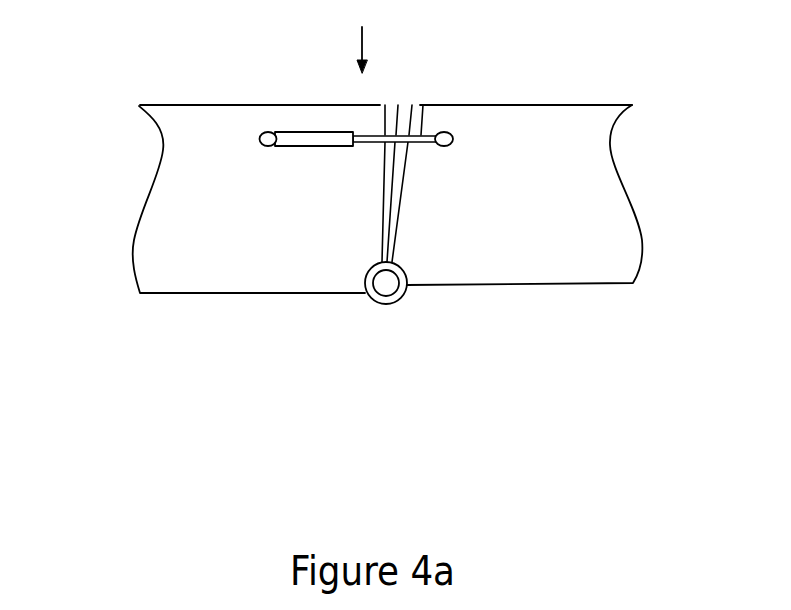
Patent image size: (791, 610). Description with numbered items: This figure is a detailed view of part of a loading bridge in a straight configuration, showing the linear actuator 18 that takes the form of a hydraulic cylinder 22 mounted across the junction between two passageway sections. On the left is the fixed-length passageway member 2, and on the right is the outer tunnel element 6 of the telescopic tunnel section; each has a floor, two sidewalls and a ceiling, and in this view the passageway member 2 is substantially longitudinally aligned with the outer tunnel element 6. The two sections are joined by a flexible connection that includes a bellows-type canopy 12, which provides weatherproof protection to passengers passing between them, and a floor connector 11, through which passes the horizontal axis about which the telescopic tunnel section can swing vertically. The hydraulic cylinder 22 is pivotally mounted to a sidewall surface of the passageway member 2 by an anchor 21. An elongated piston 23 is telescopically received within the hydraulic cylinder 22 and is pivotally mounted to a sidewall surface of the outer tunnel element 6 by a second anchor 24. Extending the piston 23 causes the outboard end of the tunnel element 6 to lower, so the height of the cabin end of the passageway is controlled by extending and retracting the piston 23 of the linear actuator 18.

The fixed-length passageway member 2 is at (243, 293).
The outer tunnel element 6 is at (512, 285).
The floor connector 11 is at (397, 302).
The bellows-type canopy 12 is at (407, 185).
The linear actuator 18 is at (363, 36).
The anchor 21 is at (262, 135).
The hydraulic cylinder 22 is at (313, 132).
The elongated piston 23 is at (423, 105).
The anchor 24 is at (445, 131).